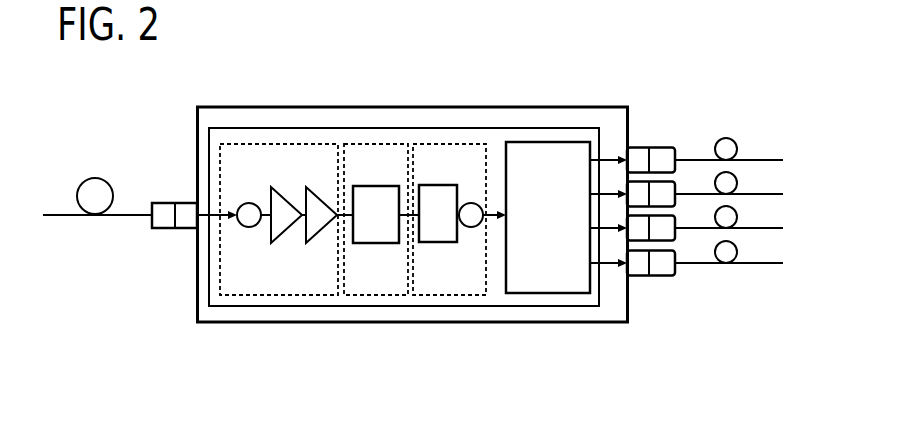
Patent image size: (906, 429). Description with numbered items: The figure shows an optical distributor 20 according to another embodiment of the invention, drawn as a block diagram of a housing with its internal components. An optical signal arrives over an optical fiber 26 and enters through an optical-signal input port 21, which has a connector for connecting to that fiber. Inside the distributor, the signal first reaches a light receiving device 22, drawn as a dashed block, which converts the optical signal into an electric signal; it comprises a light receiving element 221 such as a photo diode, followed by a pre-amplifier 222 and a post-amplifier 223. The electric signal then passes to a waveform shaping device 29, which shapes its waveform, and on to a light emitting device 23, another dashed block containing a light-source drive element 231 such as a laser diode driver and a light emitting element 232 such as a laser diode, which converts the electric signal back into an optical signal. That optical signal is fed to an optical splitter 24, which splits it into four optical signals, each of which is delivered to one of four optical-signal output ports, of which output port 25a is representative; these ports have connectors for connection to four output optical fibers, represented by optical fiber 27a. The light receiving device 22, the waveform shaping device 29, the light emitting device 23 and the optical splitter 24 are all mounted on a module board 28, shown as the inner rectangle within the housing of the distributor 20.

The optical distributor 20 is at (263, 107).
The optical-signal input port 21 is at (167, 203).
The light receiving device 22 is at (310, 144).
The light emitting device 23 is at (452, 144).
The optical splitter 24 is at (578, 142).
The optical-signal output port 25a is at (653, 294).
The optical fiber 26 is at (95, 178).
The optical fiber 27a is at (727, 121).
The module board 28 is at (528, 128).
The waveform shaping device 29 is at (375, 186).
The light receiving element 221 is at (249, 227).
The pre-amplifier 222 is at (288, 228).
The post-amplifier 223 is at (324, 227).
The light-source drive element 231 is at (435, 242).
The light emitting element 232 is at (471, 227).